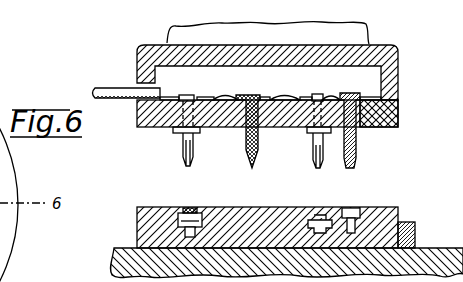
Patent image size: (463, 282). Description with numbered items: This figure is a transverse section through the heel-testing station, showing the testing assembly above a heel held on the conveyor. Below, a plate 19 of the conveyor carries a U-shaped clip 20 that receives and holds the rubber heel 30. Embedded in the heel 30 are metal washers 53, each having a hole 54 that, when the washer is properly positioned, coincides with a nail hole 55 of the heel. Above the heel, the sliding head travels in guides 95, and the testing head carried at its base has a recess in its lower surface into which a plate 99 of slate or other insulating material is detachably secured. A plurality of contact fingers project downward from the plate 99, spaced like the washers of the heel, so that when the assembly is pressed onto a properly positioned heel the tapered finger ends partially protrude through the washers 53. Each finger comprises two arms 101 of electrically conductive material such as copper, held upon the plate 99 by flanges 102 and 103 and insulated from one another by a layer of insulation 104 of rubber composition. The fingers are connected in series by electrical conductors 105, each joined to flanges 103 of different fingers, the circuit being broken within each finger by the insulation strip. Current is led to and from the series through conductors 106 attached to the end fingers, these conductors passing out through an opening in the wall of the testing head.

The plate 19 is at (114, 262).
The U-shaped clip 20 is at (415, 231).
The rubber heel 30 is at (398, 210).
The metal washer 53 is at (195, 209).
The hole 54 is at (200, 211).
The nail hole 55 is at (188, 208).
The guide 95 is at (377, 44).
The plate of insulating material 99 is at (157, 127).
The arm 101 is at (187, 146).
The flange 102 is at (197, 127).
The flange 103 is at (198, 97).
The layer of insulation 104 is at (275, 95).
The electrical conductor 105 is at (226, 97).
The conductor 106 is at (93, 88).